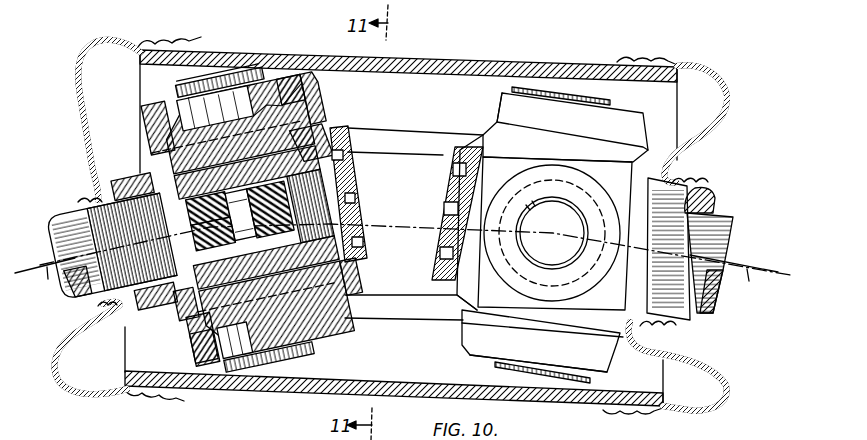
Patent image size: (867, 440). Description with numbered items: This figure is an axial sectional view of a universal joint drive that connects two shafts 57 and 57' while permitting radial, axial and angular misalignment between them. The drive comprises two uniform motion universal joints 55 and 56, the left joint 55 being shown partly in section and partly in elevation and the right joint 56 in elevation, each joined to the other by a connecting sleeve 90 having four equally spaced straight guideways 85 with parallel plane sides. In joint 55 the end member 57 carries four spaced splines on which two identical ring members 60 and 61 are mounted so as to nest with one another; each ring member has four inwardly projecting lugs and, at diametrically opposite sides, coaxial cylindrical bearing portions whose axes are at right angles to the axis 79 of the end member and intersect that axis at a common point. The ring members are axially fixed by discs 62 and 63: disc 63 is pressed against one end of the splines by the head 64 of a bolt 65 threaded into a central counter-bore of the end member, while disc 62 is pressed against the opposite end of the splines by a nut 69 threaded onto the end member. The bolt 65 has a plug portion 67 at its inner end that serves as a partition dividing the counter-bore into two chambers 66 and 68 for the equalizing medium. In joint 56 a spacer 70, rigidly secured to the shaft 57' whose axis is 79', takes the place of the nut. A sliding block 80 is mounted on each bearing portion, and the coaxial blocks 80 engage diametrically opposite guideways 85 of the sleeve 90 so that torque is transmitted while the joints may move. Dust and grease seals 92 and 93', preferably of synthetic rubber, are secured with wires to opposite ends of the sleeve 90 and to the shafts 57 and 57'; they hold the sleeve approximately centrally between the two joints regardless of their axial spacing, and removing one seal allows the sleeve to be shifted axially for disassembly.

The universal joint 55 is at (302, 128).
The universal joint 56 is at (618, 153).
The end member 57 is at (183, 231).
The shaft 57' is at (711, 249).
The ring member 60 is at (190, 157).
The ring member 61 is at (260, 108).
The disc 62 is at (150, 147).
The disc 63 is at (287, 137).
The head 64 is at (340, 175).
The bolt 65 is at (255, 226).
The chamber 66 is at (205, 240).
The plug portion 67 is at (258, 226).
The chamber 68 is at (347, 278).
The nut 69 is at (128, 182).
The spacer 70 is at (687, 323).
The axis 79 is at (45, 280).
The axis 79' is at (734, 282).
The sliding block 80 is at (296, 86).
The guideway 85 is at (414, 208).
The sleeve 90 is at (433, 63).
The dust and grease seal 92 is at (77, 67).
The dust and grease seal 93' is at (712, 124).